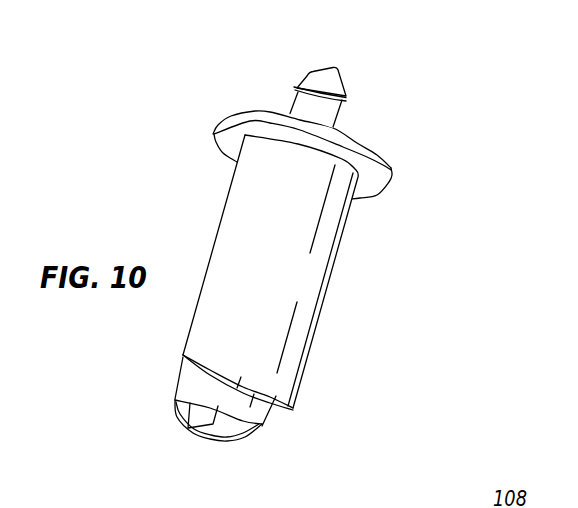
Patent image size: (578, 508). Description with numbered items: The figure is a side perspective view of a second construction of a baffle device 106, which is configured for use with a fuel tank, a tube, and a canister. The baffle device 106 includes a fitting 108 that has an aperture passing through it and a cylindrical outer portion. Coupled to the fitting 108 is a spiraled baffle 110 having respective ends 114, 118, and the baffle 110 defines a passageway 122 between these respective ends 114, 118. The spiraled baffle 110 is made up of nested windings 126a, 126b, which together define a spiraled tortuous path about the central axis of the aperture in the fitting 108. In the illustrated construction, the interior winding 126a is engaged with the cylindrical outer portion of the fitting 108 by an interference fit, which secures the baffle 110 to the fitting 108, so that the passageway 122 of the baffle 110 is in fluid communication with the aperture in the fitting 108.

The baffle device 106 is at (438, 144).
The fitting 108 is at (391, 172).
The spiraled baffle 110 is at (305, 277).
The end 114 is at (190, 438).
The end 118 is at (345, 153).
The passageway 122 is at (228, 423).
The interior winding 126a is at (258, 438).
The winding 126b is at (295, 412).